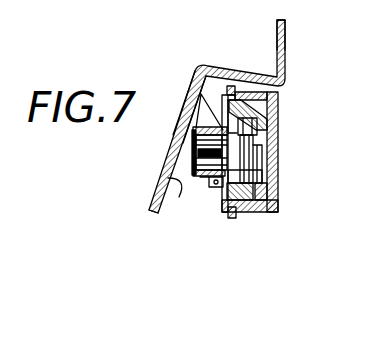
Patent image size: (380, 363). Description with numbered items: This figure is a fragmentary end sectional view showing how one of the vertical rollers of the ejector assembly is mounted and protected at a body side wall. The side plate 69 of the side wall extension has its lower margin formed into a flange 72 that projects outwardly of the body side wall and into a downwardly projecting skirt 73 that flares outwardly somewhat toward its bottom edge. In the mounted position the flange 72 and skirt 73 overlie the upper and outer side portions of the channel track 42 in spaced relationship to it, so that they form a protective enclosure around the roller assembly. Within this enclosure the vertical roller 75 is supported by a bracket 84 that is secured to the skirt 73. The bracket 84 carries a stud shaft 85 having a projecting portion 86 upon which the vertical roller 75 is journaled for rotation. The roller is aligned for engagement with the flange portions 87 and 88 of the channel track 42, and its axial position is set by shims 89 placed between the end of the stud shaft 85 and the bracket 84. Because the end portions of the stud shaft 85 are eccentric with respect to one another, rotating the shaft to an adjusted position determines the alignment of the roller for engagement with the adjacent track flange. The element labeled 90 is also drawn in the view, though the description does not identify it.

The side plate 69 is at (284, 21).
The flange 72 is at (231, 70).
The skirt 73 is at (163, 190).
The channel track 42 is at (279, 103).
The flange portion 87 is at (268, 92).
The projecting portion 86 is at (248, 163).
The vertical roller 75 is at (277, 193).
The flange portion 88 is at (253, 208).
The pin 90 is at (226, 213).
The stud shaft 85 is at (181, 142).
The shim 89 is at (178, 160).
The bracket 84 is at (208, 182).